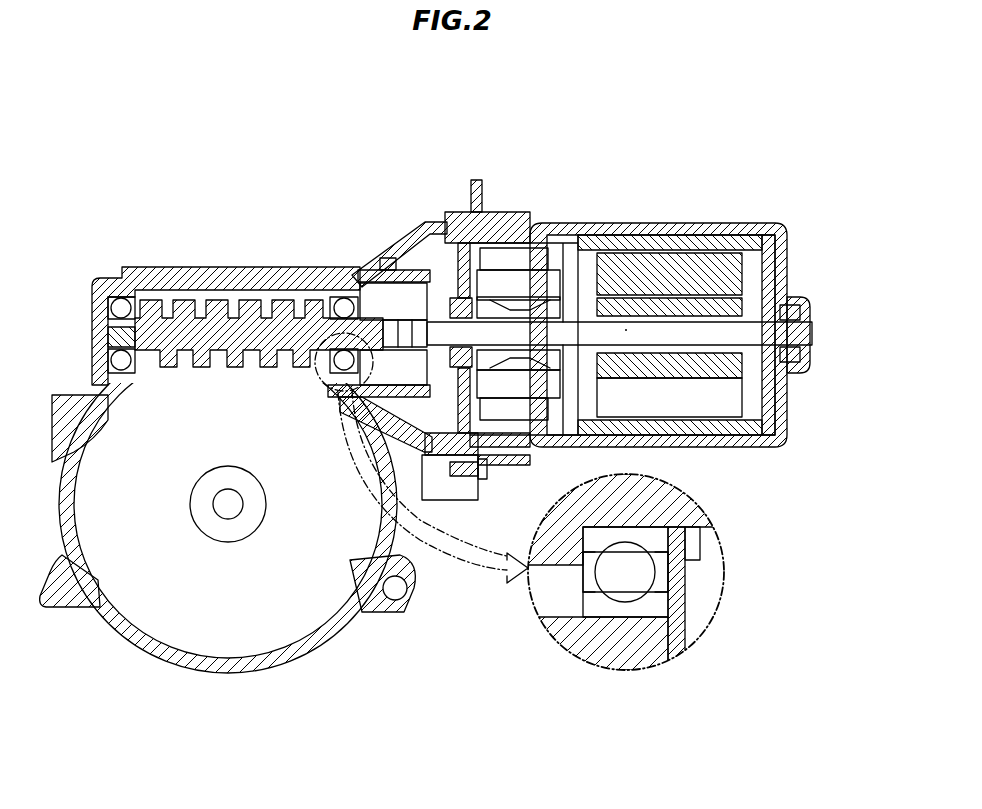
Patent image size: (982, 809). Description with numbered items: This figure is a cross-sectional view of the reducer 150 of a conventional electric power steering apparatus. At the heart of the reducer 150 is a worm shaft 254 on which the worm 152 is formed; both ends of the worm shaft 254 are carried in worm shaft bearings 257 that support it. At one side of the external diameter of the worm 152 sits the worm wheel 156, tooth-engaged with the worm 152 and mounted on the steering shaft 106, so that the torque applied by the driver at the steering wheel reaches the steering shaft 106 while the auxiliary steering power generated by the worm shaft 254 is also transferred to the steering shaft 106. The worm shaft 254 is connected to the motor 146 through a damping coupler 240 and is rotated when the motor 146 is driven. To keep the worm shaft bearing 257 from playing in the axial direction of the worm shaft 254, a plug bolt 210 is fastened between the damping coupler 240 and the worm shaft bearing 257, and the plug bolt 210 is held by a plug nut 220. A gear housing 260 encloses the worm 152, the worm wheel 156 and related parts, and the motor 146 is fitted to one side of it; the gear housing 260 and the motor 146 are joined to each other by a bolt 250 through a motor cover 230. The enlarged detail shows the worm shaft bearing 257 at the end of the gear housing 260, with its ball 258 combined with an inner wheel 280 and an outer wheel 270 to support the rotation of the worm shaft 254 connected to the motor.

The steering shaft 106 is at (230, 508).
The motor 146 is at (619, 224).
The reducer 150 is at (463, 143).
The worm 152 is at (177, 315).
The worm wheel 156 is at (297, 622).
The plug bolt 210 is at (394, 265).
The plug nut 220 is at (403, 258).
The motor cover 230 is at (497, 214).
The damping coupler 240 is at (413, 380).
The bolt 250 is at (487, 470).
The worm shaft 254 is at (115, 335).
The worm shaft bearing 257 is at (115, 300).
The ball 258 is at (645, 578).
The gear housing 260 is at (224, 271).
The outer wheel 270 is at (660, 612).
The inner wheel 280 is at (660, 540).